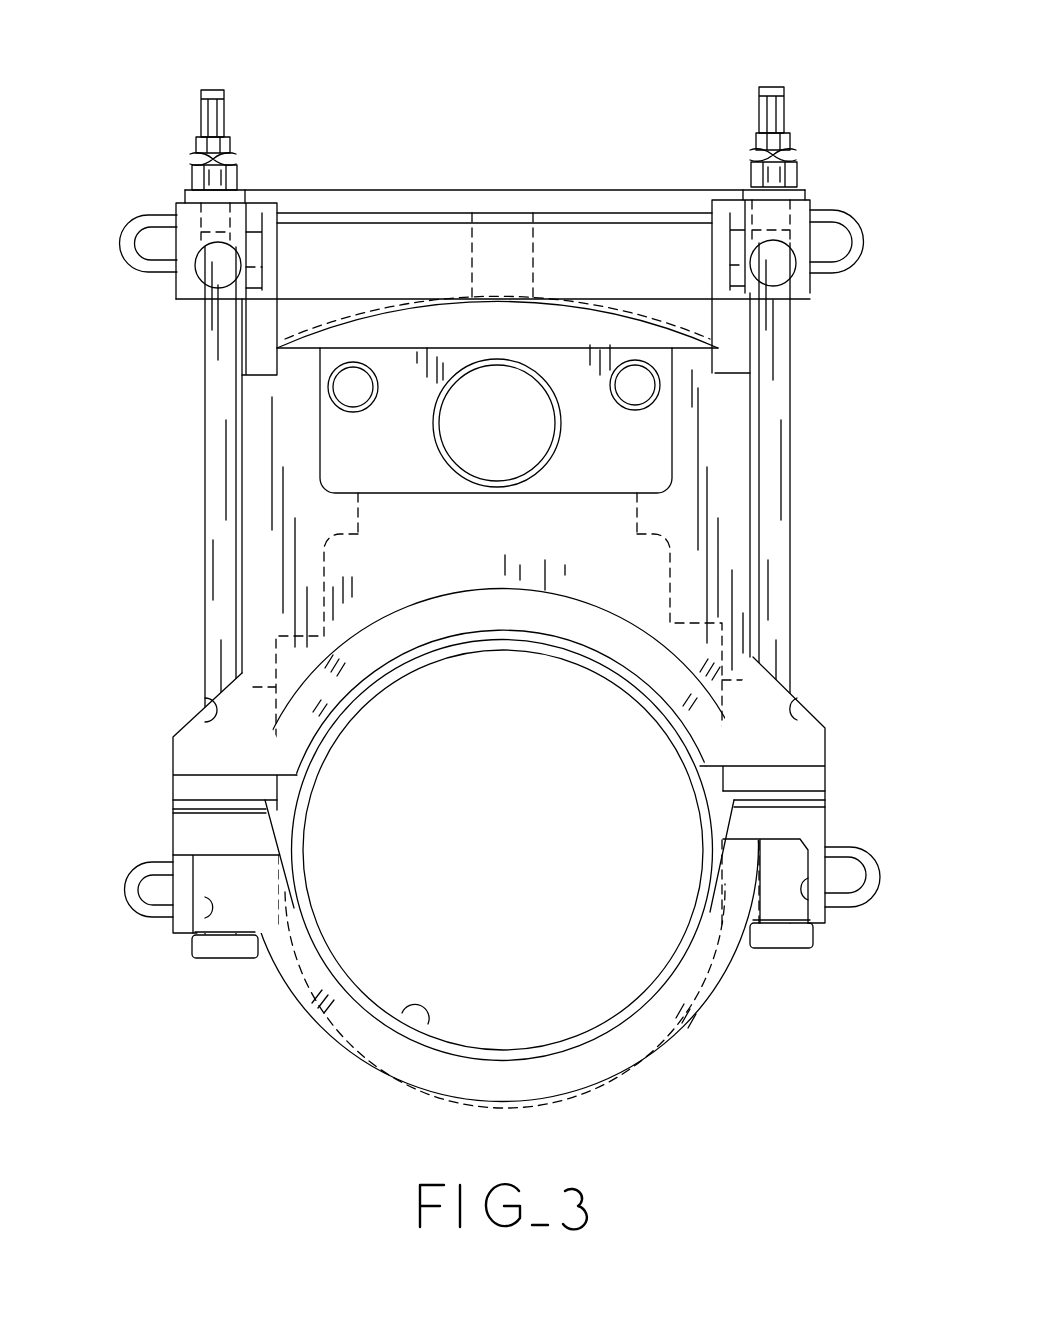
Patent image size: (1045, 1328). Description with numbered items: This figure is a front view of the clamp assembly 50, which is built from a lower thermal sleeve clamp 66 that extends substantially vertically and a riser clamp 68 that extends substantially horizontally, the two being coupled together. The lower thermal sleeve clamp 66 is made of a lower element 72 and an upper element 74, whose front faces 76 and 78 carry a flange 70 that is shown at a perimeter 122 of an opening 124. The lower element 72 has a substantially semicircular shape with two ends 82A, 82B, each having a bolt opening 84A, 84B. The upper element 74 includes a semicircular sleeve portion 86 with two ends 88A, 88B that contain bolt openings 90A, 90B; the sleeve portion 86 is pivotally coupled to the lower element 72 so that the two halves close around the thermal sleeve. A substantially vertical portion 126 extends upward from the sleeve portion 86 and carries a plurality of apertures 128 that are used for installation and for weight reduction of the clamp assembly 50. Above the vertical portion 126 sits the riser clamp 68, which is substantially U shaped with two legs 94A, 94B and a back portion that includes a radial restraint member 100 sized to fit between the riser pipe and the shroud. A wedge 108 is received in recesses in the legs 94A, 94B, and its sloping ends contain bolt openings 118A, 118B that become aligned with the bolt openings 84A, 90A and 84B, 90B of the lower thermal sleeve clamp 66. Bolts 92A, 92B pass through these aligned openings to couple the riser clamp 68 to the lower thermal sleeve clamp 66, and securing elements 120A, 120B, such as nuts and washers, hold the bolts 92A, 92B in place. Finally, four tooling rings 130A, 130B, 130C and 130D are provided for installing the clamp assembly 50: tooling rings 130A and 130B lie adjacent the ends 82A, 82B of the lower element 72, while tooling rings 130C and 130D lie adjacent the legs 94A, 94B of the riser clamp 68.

The clamp assembly 50 is at (640, 76).
The lower thermal sleeve clamp 66 is at (722, 572).
The riser clamp 68 is at (165, 260).
The flange 70 is at (611, 1026).
The lower element 72 is at (193, 835).
The upper element 74 is at (370, 565).
The front face 76 is at (522, 1080).
The front face 78 is at (655, 658).
The lower element end 82A is at (192, 822).
The lower element end 82B is at (805, 818).
The bolt opening 84A is at (200, 917).
The bolt opening 84B is at (815, 903).
The sleeve portion 86 is at (565, 612).
The end 88A is at (200, 758).
The end 88B is at (808, 757).
The bolt opening 90A is at (207, 699).
The bolt opening 90B is at (793, 692).
The bolt 92A is at (214, 463).
The bolt 92B is at (778, 458).
The leg 94A is at (192, 228).
The leg 94B is at (802, 212).
The radial restraint member 100 is at (503, 247).
The wedge 108 is at (430, 205).
The bolt opening 118A is at (198, 268).
The bolt opening 118B is at (777, 268).
The securing element 120A is at (200, 132).
The securing element 120B is at (785, 115).
The perimeter 122 is at (461, 1043).
The opening 124 is at (402, 1013).
The substantially vertical portion 126 is at (648, 458).
The apertures 128 is at (627, 381).
The tooling ring 130A is at (128, 897).
The tooling ring 130B is at (882, 874).
The tooling ring 130C is at (135, 242).
The tooling ring 130D is at (855, 225).